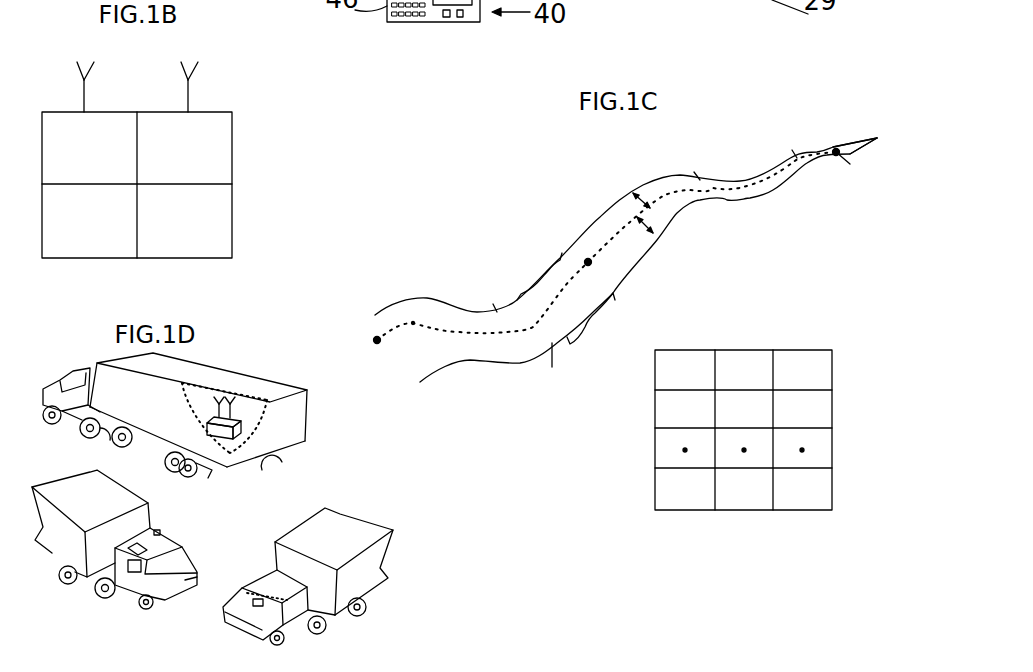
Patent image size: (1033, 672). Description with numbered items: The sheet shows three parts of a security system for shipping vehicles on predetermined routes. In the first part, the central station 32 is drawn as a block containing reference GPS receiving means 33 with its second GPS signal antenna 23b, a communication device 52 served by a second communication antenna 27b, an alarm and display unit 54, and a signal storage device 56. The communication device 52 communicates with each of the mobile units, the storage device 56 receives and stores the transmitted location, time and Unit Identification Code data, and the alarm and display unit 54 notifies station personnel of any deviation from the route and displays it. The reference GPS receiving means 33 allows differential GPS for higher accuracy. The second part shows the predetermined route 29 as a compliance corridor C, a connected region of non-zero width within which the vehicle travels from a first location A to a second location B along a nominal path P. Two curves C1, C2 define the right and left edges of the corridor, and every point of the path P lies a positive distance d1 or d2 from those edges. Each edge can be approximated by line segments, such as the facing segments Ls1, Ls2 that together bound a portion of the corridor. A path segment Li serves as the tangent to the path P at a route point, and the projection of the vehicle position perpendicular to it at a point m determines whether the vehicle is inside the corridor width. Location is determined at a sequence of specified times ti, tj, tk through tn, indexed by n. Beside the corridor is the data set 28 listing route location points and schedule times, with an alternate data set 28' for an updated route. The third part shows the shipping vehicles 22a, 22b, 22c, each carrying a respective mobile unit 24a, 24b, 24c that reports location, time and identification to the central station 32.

In FIG. 1B, the central station 32 is at (243, 110).
In FIG. 1B, the reference GPS receiving means 33 is at (89, 148).
In FIG. 1B, the communication device 52 is at (184, 148).
In FIG. 1B, the alarm and display unit 54 is at (184, 221).
In FIG. 1B, the signal storage device 56 is at (89, 221).
In FIG. 1B, the second GPS signal antenna 23b is at (84, 82).
In FIG. 1B, the second communication antenna 27b is at (188, 82).
In FIG. 1C, the predetermined route 29 is at (626, 286).
In FIG. 1C, the corridor edge curve C1 is at (470, 360).
In FIG. 1C, the corridor edge curve C2 is at (448, 298).
In FIG. 1C, the first location A is at (380, 340).
In FIG. 1C, the second location B is at (840, 150).
In FIG. 1C, the compliance corridor C is at (866, 137).
In FIG. 1C, the nominal path P is at (413, 323).
In FIG. 1C, the schedule time ti is at (495, 307).
In FIG. 1C, the schedule time tj is at (588, 262).
In FIG. 1C, the schedule time tk is at (697, 177).
In FIG. 1C, the specified time tn is at (791, 153).
In FIG. 1C, the sequence index n is at (850, 164).
In FIG. 1C, the projection point m is at (590, 260).
In FIG. 1C, the path segment Li is at (557, 368).
In FIG. 1C, the line segment Ls1 is at (596, 327).
In FIG. 1C, the line segment Ls2 is at (530, 269).
In FIG. 1C, the distance to corridor edge d1 is at (648, 190).
In FIG. 1C, the distance to corridor edge d2 is at (655, 215).
In FIG. 1C, the predetermined route information data set 28 is at (776, 430).
In FIG. 1C, the alternate predetermined route information 28' is at (779, 489).
In FIG. 1D, the shipping vehicle 22a is at (267, 447).
In FIG. 1D, the shipping vehicle 22b is at (68, 538).
In FIG. 1D, the shipping vehicle 22c is at (378, 567).
In FIG. 1D, the mobile unit 24a is at (250, 422).
In FIG. 1D, the mobile unit 24b is at (157, 532).
In FIG. 1D, the mobile unit 24c is at (262, 592).